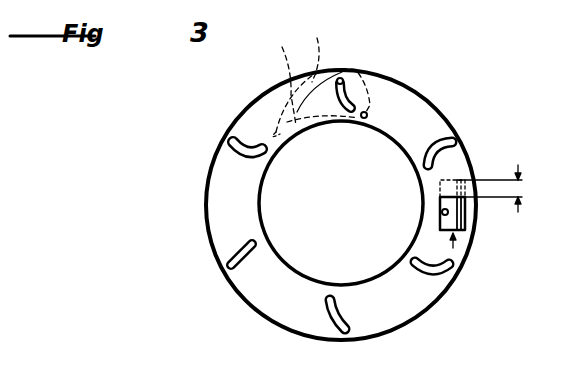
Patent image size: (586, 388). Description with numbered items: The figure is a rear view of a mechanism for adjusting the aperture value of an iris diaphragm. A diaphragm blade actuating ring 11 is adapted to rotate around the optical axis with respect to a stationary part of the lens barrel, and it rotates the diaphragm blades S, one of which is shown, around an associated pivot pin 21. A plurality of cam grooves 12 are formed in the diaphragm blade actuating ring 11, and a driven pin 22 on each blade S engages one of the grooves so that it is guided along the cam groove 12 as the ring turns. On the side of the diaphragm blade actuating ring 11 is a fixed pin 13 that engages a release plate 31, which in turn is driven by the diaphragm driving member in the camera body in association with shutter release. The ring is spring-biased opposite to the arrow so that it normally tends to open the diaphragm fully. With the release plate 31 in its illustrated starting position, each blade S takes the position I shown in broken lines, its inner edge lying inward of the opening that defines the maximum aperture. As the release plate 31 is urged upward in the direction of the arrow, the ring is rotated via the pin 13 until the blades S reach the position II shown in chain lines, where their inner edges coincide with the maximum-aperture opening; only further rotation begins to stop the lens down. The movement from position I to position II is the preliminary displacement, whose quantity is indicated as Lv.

The diaphragm blade actuating ring 11 is at (212, 176).
The cam grooves 12 is at (240, 138).
The fixed pin 13 is at (442, 212).
The pivot pin 21 is at (370, 110).
The driven pin 22 is at (343, 77).
The release plate 31 is at (466, 222).
The diaphragm blade S is at (296, 130).
The starting position of diaphragm blade I is at (311, 56).
The fully opened position of diaphragm blade II is at (277, 82).